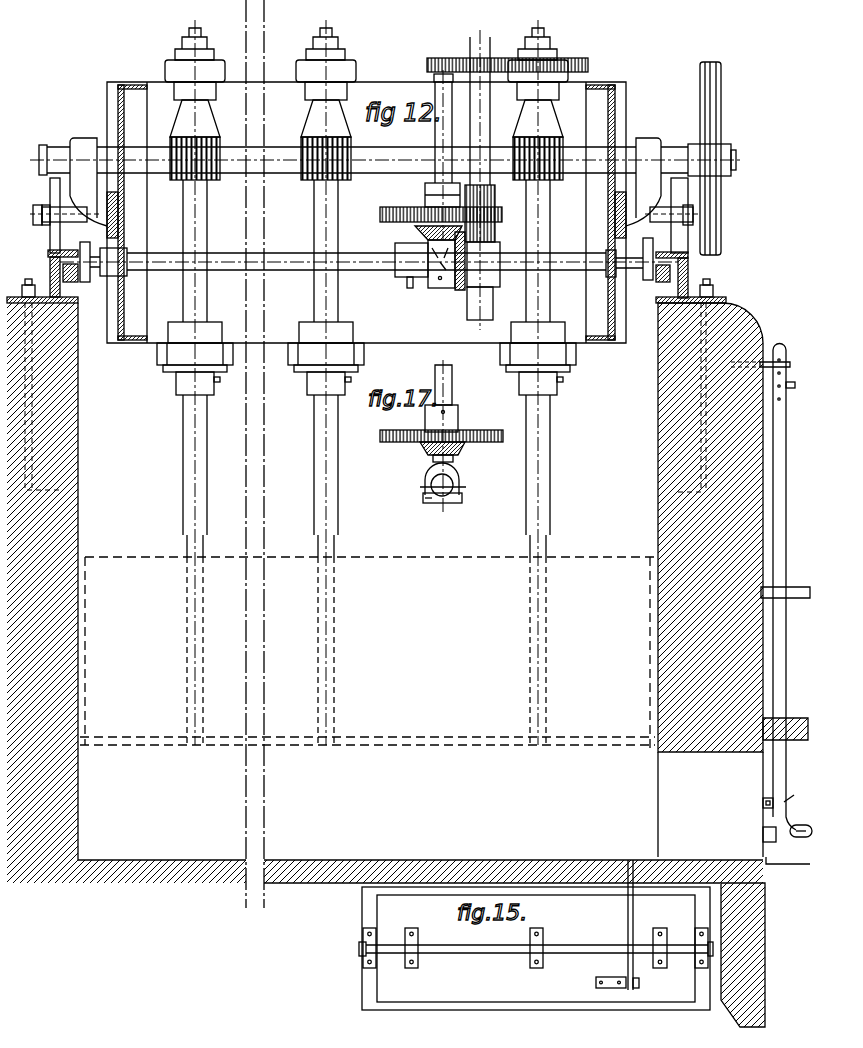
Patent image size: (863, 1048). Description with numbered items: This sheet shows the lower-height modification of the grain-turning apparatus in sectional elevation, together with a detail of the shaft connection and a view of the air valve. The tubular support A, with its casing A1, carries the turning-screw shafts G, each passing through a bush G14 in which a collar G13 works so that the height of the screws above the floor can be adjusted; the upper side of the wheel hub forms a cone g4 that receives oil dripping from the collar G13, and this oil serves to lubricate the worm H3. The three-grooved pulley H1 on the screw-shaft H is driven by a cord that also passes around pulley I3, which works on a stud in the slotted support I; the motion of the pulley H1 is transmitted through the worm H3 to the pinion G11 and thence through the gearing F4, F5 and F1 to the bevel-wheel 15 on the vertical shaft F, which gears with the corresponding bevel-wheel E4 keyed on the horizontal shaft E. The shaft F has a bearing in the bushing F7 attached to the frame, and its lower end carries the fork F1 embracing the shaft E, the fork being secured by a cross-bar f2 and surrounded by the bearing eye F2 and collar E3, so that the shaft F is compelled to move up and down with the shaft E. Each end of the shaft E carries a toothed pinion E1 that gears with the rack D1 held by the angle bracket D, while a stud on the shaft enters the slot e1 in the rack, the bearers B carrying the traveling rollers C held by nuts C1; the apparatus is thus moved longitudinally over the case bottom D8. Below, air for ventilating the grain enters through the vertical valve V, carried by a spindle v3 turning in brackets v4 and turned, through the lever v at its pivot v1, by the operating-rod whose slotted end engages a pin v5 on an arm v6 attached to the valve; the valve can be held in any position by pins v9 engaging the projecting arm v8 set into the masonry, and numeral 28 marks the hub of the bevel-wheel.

In FIG. 12, the tubular support A is at (370, 646).
In FIG. 12, the frame casing A1 is at (366, 212).
In FIG. 12, the bearers B is at (140, 212).
In FIG. 12, the traveling rollers C is at (365, 215).
In FIG. 12, the nut C1 is at (363, 218).
In FIG. 12, the angle bracket D is at (48, 276).
In FIG. 12, the rack D1 is at (76, 284).
In FIG. 12, the tank bottom D8 is at (367, 732).
In FIG. 12, the horizontal shaft E is at (370, 262).
In FIG. 17, the horizontal shaft E is at (442, 485).
In FIG. 12, the toothed pinion E1 is at (374, 257).
In FIG. 12, the shaft collar E3 is at (411, 265).
In FIG. 12, the bevel-wheel E4 is at (483, 264).
In FIG. 12, the vertical shaft F is at (442, 186).
In FIG. 17, the vertical shaft F is at (444, 398).
In FIG. 12, the pin or fork F1 is at (441, 206).
In FIG. 17, the pin or fork F1 is at (441, 435).
In FIG. 17, the bearing eye F2 is at (457, 483).
In FIG. 12, the gearing F4 is at (442, 61).
In FIG. 12, the gearing F5 is at (488, 180).
In FIG. 12, the bushing F7 is at (480, 309).
In FIG. 17, the cross-bar f2 is at (425, 494).
In FIG. 12, the shaft G is at (366, 382).
In FIG. 12, the pinion G11 is at (518, 61).
In FIG. 12, the collar G13 is at (223, 72).
In FIG. 12, the bush G14 is at (210, 97).
In FIG. 12, the cone g4 is at (552, 132).
In FIG. 12, the screw-shaft H is at (385, 160).
In FIG. 12, the three-grooved pulley H1 is at (718, 110).
In FIG. 12, the worm H3 is at (545, 163).
In FIG. 12, the support I is at (365, 182).
In FIG. 12, the pulley I3 is at (701, 160).
In FIG. 12, the bevel-wheel 15 is at (418, 228).
In FIG. 12, the hub 28 is at (458, 298).
In FIG. 12, the groove or slot e1 is at (84, 306).
In FIG. 12, the valve V is at (761, 798).
In FIG. 15, the lever v is at (536, 948).
In FIG. 12, the pivot v1 is at (786, 557).
In FIG. 15, the pivot v1 is at (634, 922).
In FIG. 15, the spindle v3 is at (535, 949).
In FIG. 12, the brackets v4 is at (801, 768).
In FIG. 15, the brackets v4 is at (362, 950).
In FIG. 12, the pin v5 is at (801, 821).
In FIG. 15, the pin v5 is at (638, 984).
In FIG. 12, the arm v6 is at (771, 842).
In FIG. 15, the arm v6 is at (611, 973).
In FIG. 12, the projecting arm v8 is at (770, 356).
In FIG. 12, the pin v9 is at (788, 386).